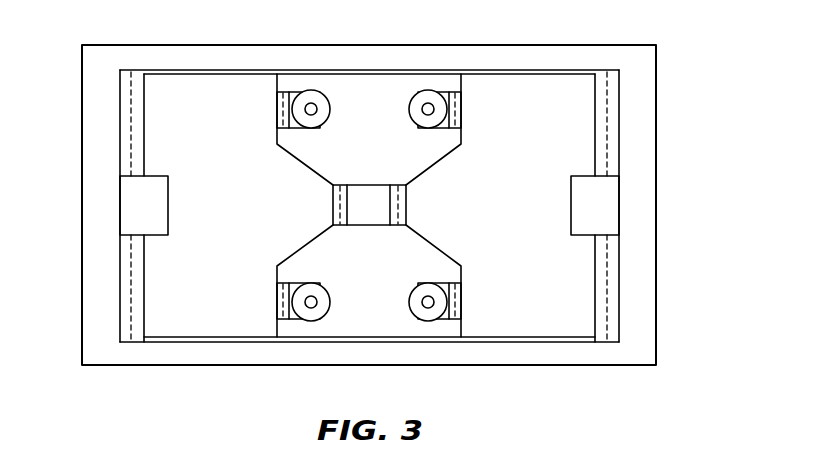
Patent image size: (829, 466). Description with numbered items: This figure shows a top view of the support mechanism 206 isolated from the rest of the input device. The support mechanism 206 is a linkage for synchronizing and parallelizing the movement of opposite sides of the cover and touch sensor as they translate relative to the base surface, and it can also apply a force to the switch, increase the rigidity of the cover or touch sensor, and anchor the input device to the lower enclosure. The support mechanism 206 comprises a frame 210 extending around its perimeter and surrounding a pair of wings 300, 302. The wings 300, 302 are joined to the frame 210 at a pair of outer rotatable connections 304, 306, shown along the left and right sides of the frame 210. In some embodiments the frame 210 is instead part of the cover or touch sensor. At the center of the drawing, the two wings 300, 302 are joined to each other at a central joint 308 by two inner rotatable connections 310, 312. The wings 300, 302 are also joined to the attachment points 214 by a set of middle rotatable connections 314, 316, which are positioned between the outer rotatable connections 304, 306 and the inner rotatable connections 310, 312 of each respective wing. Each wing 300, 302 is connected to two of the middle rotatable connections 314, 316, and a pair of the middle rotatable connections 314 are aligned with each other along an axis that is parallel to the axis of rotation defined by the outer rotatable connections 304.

The support mechanism 206 is at (405, 187).
The frame 210 is at (639, 88).
The attachment points 214 is at (423, 114).
The first wing 300 is at (209, 95).
The second wing 302 is at (528, 95).
The first outer rotatable connection 304 is at (131, 123).
The second outer rotatable connection 306 is at (607, 123).
The central joint 308 is at (368, 226).
The first inner rotatable connection 310 is at (339, 204).
The second inner rotatable connection 312 is at (400, 204).
The first middle rotatable connections 314 is at (283, 112).
The second middle rotatable connections 316 is at (458, 110).